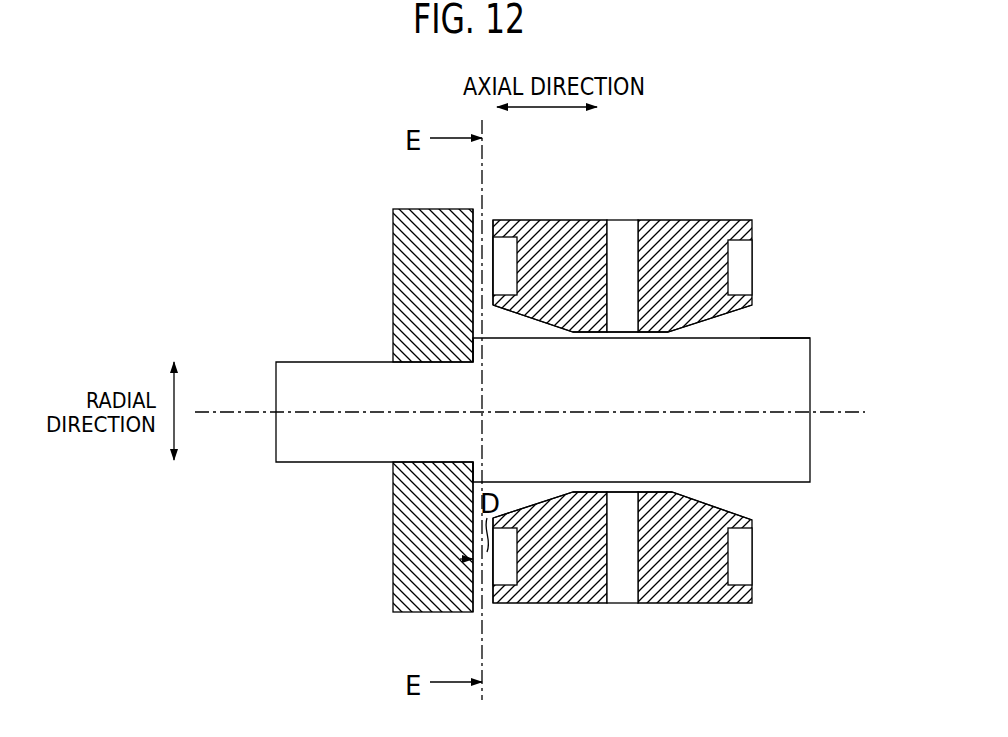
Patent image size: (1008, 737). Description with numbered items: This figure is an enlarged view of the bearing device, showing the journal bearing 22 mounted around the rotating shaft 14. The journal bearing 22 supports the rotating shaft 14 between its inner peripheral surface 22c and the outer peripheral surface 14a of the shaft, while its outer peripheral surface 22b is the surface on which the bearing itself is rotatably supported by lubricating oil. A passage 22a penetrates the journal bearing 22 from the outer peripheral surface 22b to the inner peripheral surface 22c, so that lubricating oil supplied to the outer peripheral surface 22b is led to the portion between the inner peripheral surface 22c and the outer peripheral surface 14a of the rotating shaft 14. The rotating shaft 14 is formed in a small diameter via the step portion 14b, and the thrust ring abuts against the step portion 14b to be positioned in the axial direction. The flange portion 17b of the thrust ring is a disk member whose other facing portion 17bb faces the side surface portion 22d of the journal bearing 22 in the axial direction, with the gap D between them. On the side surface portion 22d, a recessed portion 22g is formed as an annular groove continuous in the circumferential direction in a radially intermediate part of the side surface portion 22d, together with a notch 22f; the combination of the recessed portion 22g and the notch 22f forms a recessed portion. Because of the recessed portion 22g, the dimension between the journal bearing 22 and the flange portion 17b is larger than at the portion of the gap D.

The rotating shaft 14 is at (810, 366).
The outer peripheral surface 14a is at (798, 338).
The step portion 14b is at (472, 437).
The flange portion 17b is at (416, 209).
The other facing portion 17bb is at (462, 323).
The journal bearing 22 is at (574, 401).
The passage 22a is at (623, 220).
The outer peripheral surface 22b is at (575, 220).
The inner peripheral surface 22c is at (648, 338).
The side surface portion 22d is at (490, 232).
The notch 22f is at (573, 332).
The recessed portion 22g is at (493, 267).